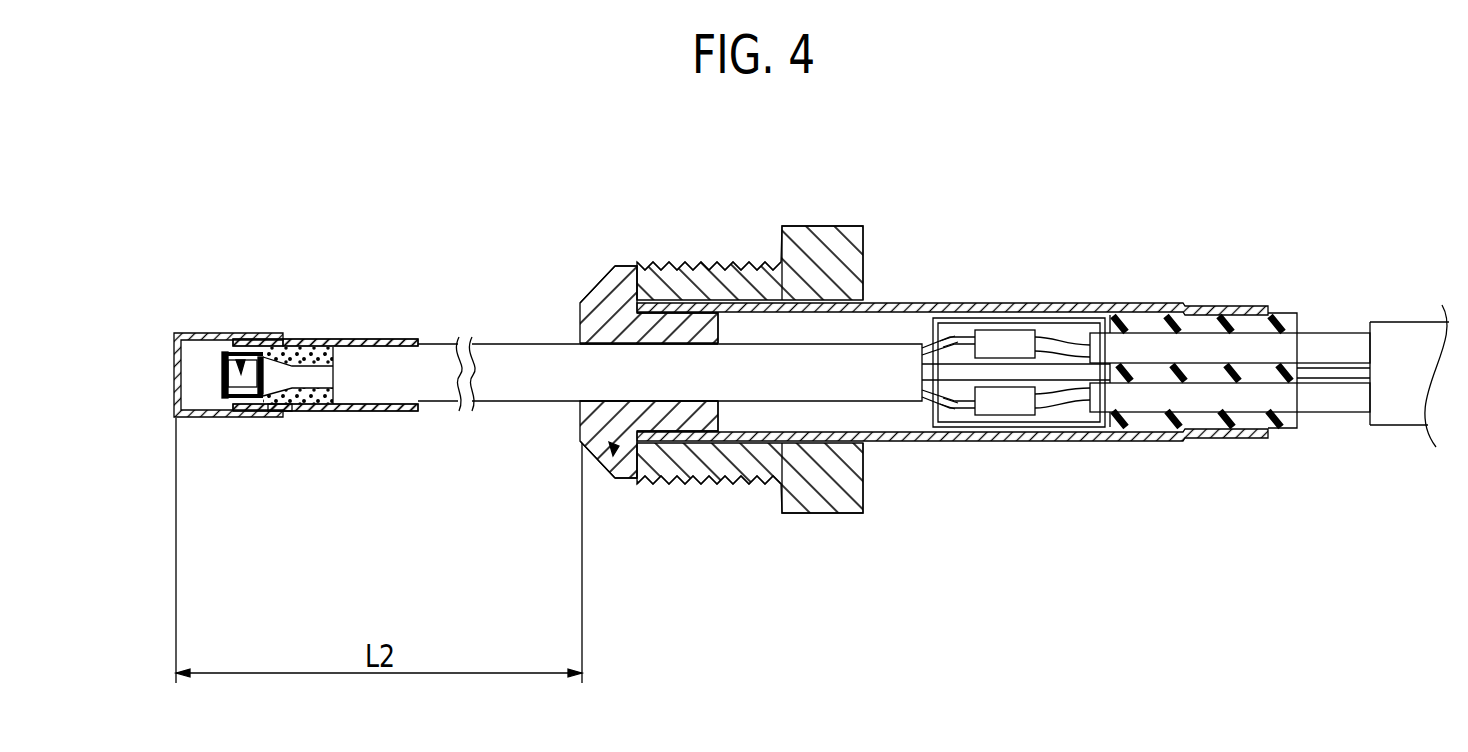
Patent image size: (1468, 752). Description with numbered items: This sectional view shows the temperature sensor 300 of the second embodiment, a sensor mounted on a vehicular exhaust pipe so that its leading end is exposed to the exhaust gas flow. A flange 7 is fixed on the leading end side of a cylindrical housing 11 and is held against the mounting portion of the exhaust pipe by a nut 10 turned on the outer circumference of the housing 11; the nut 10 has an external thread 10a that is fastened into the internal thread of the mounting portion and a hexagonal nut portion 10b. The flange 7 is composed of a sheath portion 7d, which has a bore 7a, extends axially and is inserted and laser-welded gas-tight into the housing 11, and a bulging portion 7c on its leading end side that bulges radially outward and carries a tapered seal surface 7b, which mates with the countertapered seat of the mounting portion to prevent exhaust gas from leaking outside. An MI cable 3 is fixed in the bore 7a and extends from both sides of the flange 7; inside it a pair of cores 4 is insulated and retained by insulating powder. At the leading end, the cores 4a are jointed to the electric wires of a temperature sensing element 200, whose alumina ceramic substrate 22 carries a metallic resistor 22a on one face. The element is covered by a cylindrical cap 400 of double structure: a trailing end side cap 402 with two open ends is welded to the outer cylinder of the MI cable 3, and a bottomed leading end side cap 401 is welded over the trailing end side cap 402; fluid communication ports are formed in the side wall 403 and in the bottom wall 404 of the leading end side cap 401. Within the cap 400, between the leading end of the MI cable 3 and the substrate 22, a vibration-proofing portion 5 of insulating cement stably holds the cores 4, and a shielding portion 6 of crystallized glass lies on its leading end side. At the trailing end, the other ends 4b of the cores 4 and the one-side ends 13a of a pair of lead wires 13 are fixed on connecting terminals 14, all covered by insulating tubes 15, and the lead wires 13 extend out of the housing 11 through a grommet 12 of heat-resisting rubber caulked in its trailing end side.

The MI cable 3 is at (496, 383).
The cores 4 is at (925, 352).
The cores 4a is at (288, 390).
The other ends 4b is at (960, 338).
The vibration-proofing portion 5 is at (327, 404).
The shielding portion 6 is at (280, 411).
The flange 7 is at (621, 472).
The bore 7a is at (593, 347).
The tapered seal surface 7b is at (592, 288).
The bulging portion 7c is at (614, 290).
The sheath portion 7d is at (678, 325).
The nut 10 is at (744, 486).
The external thread 10a is at (674, 486).
The hexagonal nut portion 10b is at (813, 514).
The housing 11 is at (900, 302).
The grommet 12 is at (1285, 422).
The lead wires 13 is at (1325, 347).
The one-side ends 13a is at (1050, 345).
The connecting terminals 14 is at (1007, 343).
The insulating tubes 15 is at (1078, 330).
The ceramic substrate 22 is at (222, 383).
The metallic resistor 22a is at (223, 377).
The temperature sensing element 200 is at (240, 362).
The temperature sensor 300 is at (1034, 187).
The cylindrical cap 400 is at (348, 223).
The leading end side cap 401 is at (262, 339).
The trailing end side cap 402 is at (330, 338).
The side wall 403 is at (221, 418).
The bottom wall 404 is at (173, 352).